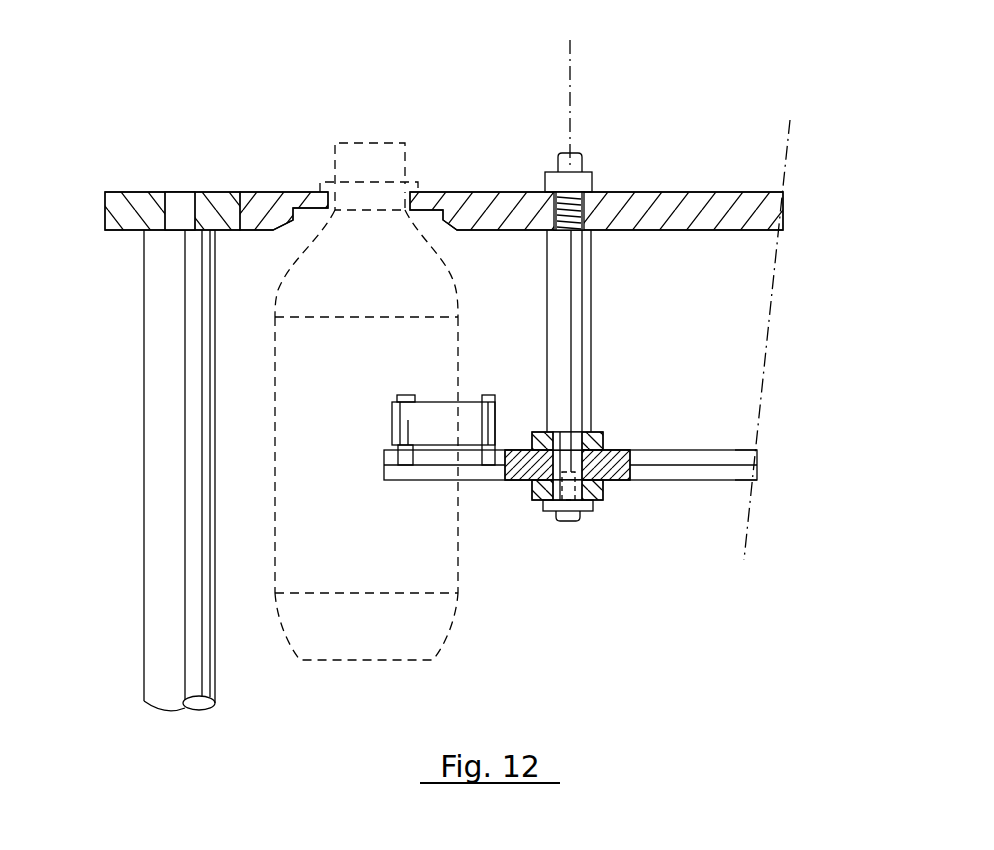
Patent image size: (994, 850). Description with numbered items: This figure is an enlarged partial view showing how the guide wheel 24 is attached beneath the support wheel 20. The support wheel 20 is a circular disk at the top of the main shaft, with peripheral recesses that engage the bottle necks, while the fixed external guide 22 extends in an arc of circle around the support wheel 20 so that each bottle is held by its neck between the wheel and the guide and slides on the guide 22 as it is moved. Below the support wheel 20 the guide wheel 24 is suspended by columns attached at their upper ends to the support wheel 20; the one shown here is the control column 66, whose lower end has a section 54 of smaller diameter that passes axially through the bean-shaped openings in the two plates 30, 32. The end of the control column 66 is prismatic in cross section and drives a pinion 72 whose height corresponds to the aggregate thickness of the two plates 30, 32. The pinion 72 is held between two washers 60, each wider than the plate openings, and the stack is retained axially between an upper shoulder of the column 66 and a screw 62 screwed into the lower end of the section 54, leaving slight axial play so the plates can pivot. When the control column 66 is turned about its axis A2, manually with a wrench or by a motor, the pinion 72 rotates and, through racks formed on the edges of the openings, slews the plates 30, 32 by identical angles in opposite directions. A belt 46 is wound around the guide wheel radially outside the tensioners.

The axis of the control column A2 is at (570, 63).
The support wheel 20 is at (669, 210).
The fixed external guide 22 is at (135, 208).
The arm 24 is at (683, 485).
The plate 30 is at (733, 481).
The plate 32 is at (735, 452).
The belt 46 is at (433, 412).
The section of smaller diameter 54 is at (573, 440).
The washer 60 is at (538, 430).
The screw 62 is at (566, 522).
The control column 66 is at (582, 319).
The pinion 72 is at (613, 452).